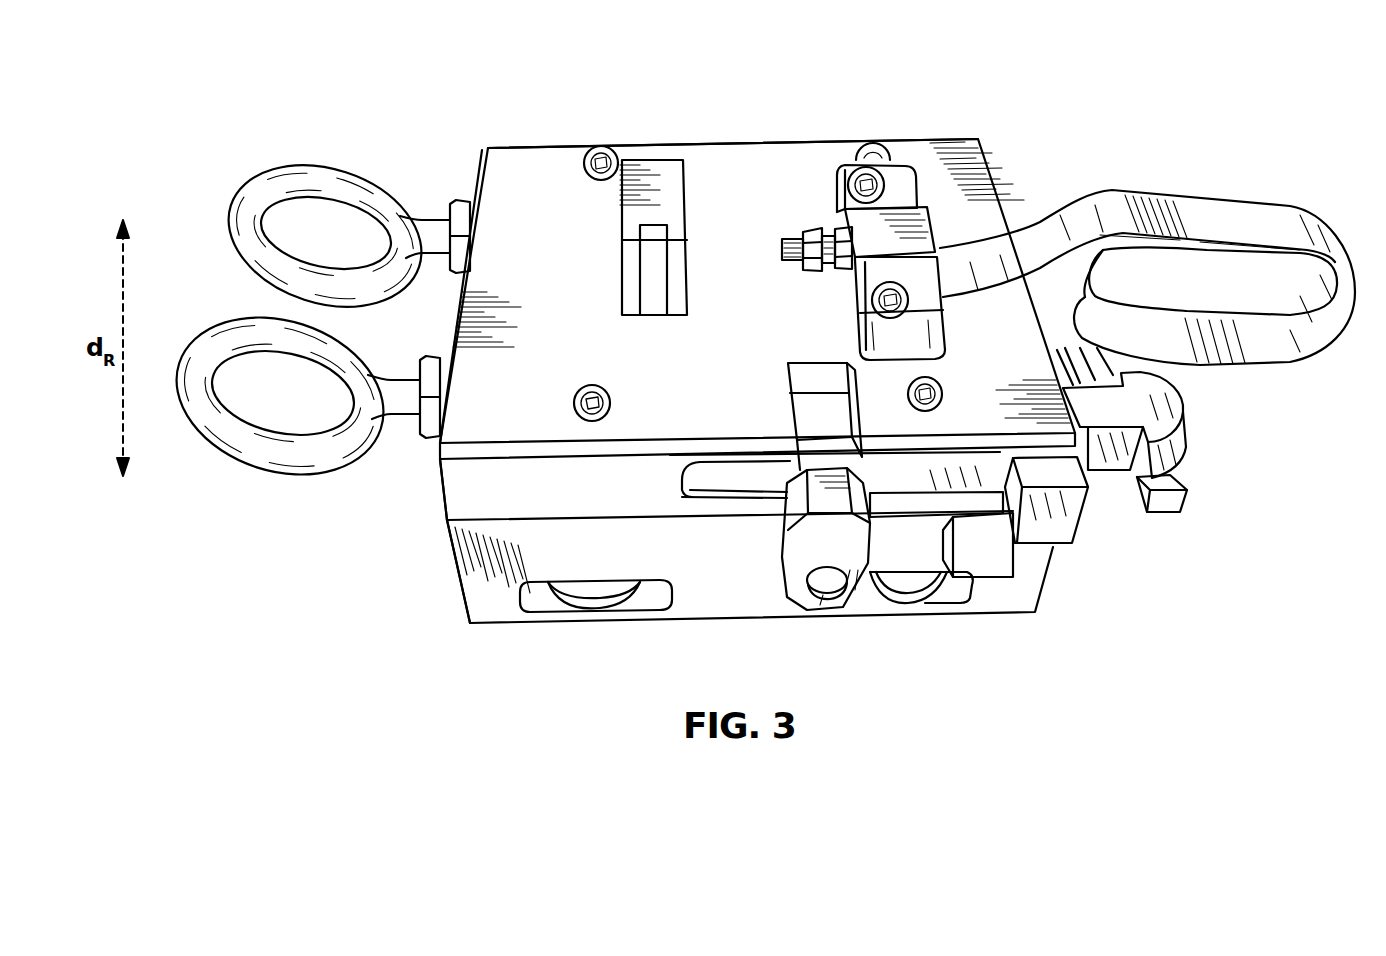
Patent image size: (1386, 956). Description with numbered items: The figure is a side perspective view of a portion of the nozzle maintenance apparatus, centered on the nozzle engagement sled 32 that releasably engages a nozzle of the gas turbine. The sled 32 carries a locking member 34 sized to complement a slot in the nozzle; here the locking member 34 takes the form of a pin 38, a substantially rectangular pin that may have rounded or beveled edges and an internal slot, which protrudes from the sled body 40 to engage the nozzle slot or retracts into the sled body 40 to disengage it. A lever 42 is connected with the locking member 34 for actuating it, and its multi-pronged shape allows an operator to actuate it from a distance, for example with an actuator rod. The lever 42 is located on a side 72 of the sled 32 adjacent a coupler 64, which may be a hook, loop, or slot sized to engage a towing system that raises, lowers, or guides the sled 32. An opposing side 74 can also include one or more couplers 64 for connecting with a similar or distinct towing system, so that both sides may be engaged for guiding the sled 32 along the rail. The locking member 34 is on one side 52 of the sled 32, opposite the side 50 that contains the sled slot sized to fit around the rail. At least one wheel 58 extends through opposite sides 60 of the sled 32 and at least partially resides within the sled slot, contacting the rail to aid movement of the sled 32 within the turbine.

The nozzle engagement sled 32 is at (846, 132).
The locking member 34 is at (676, 290).
The pin 38 is at (686, 305).
The sled body 40 is at (760, 170).
The lever 42 is at (1168, 488).
The side 50 is at (532, 624).
The side 52 is at (562, 408).
The wheel 58 is at (912, 598).
The opposite sides 60 is at (602, 510).
The coupler 64 is at (258, 445).
The side 72 is at (1004, 173).
The opposing side 74 is at (434, 513).